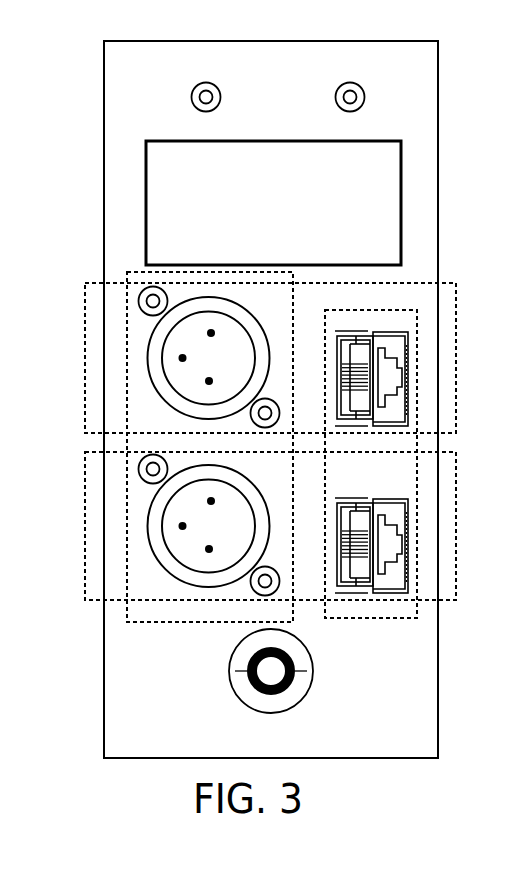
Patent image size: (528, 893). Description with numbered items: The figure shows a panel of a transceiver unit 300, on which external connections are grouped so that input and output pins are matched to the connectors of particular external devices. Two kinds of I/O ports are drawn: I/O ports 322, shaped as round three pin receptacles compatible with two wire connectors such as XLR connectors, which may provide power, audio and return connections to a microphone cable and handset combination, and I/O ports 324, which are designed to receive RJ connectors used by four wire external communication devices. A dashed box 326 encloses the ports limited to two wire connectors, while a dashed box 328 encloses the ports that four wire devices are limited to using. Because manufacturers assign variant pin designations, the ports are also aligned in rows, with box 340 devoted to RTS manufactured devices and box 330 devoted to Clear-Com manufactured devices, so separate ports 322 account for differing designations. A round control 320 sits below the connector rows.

The control panel 300 is at (36, 786).
The power button 320 is at (248, 692).
The I/O port 322 is at (148, 355).
The I/O port 324 is at (407, 333).
The box 326 is at (140, 613).
The box 328 is at (407, 610).
The box 330 is at (95, 461).
The box 340 is at (95, 293).